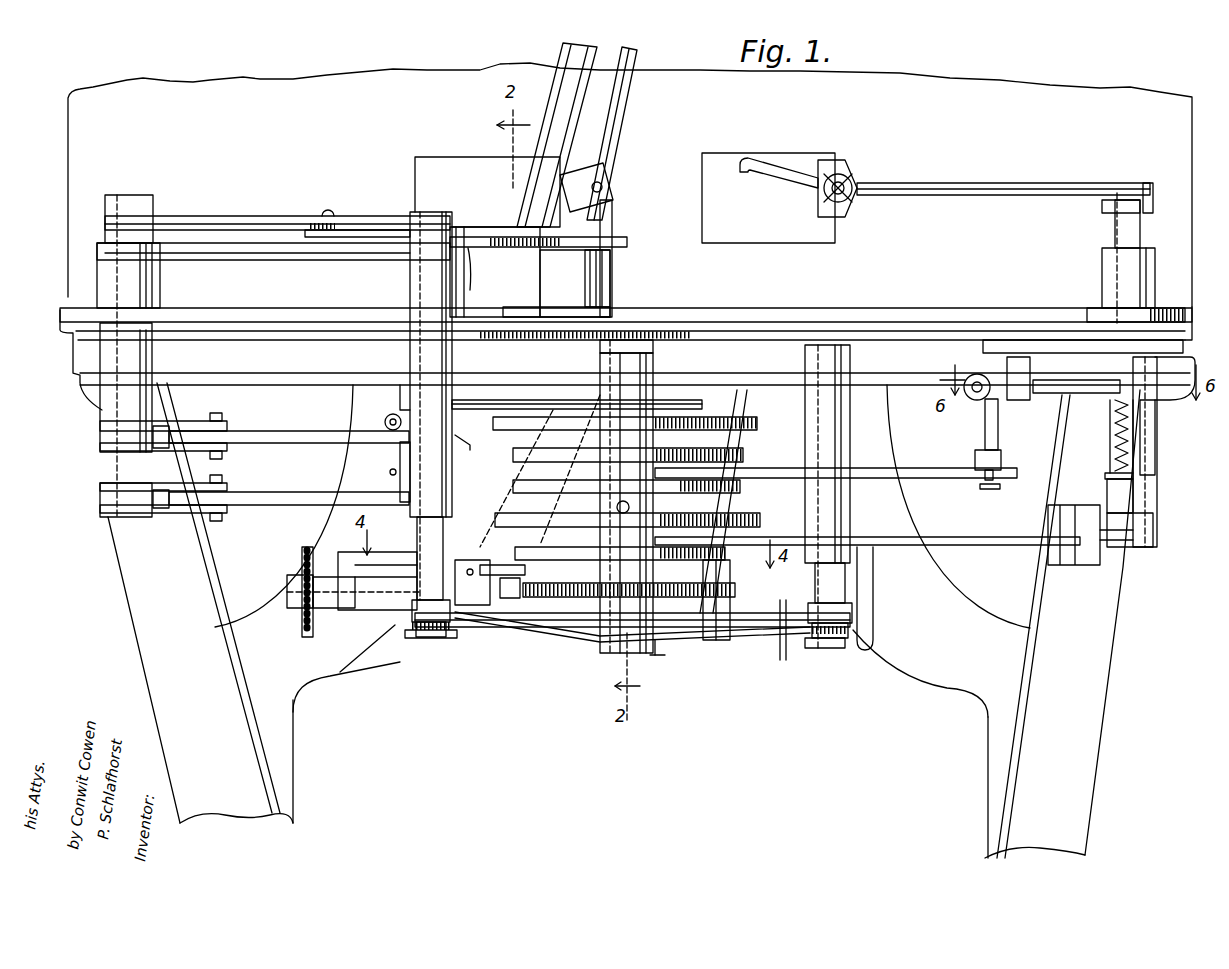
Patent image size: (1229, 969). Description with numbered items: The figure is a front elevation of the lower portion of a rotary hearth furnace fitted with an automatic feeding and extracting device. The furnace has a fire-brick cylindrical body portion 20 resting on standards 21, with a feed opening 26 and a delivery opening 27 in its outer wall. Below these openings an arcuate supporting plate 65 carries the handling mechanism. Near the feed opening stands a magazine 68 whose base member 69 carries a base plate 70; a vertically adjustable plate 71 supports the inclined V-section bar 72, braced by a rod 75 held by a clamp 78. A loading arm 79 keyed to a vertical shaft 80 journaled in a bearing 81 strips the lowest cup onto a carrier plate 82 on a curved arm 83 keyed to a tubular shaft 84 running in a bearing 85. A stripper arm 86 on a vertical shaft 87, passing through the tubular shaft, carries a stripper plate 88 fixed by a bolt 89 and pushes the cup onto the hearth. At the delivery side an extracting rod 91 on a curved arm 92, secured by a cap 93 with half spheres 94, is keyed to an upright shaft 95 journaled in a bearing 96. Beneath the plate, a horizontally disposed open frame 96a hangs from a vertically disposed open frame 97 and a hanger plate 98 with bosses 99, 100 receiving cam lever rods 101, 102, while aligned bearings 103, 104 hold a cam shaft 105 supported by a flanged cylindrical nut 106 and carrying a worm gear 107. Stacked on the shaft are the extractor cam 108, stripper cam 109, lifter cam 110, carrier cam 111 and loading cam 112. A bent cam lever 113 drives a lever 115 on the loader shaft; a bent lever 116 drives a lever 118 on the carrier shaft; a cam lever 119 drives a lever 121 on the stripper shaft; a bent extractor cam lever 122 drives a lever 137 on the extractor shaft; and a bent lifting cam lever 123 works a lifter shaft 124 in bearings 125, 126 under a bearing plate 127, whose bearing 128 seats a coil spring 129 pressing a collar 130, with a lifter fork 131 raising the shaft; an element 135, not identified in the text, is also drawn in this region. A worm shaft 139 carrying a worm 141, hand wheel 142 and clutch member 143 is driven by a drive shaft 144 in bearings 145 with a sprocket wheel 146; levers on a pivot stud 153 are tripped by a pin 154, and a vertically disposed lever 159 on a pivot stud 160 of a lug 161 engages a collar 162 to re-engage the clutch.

The cylindrical body portion 20 is at (626, 236).
The standards 21 is at (624, 620).
The feed opening 26 is at (487, 192).
The delivery opening 27 is at (768, 198).
The supporting plate 65 is at (878, 330).
The magazine 68 is at (598, 274).
The base member 69 is at (581, 278).
The base plate 70 is at (628, 242).
The plate 71 is at (607, 205).
The bar 72 is at (540, 140).
The rod 75 is at (618, 118).
The clamp 78 is at (603, 175).
The loading arm 79 is at (481, 269).
The vertical shaft 80 is at (420, 215).
The bearing 81 is at (410, 285).
The carrier plate 82 is at (495, 272).
The curved arm 83 is at (273, 254).
The tubular shaft 84 is at (105, 407).
The bearing 85 is at (160, 285).
The stripper arm 86 is at (205, 215).
The vertical shaft 87 is at (110, 517).
The stripper plate 88 is at (365, 238).
The bolt 89 is at (332, 212).
The extracting rod 91 is at (772, 166).
The curved arm 92 is at (978, 183).
The cap 93 is at (1115, 240).
The half spheres 94 is at (850, 175).
The upright shaft 95 is at (1157, 500).
The bearing 96 is at (1120, 285).
The horizontally disposed open frame 96a is at (716, 642).
The vertically disposed open frame 97 is at (742, 404).
The hanger plate 98 is at (712, 350).
The boss 99 is at (403, 405).
The boss 100 is at (850, 362).
The cam lever rod 101 is at (430, 640).
The cam lever rod 102 is at (828, 649).
The bearing 103 is at (653, 362).
The bearing 104 is at (656, 656).
The cam shaft 105 is at (596, 677).
The flanged cylindrical nut 106 is at (605, 628).
The worm gear 107 is at (722, 640).
The extractor cam 108 is at (620, 553).
The stripper cam 109 is at (627, 520).
The lifter cam 110 is at (626, 486).
The carrier cam 111 is at (628, 454).
The loading cam 112 is at (625, 422).
The bent cam lever 113 is at (485, 398).
The lever 115 is at (431, 500).
The bent lever 116 is at (300, 443).
The lever 118 is at (190, 425).
The cam lever 119 is at (275, 506).
The lever 121 is at (170, 517).
The bent extractor cam lever 122 is at (980, 546).
The bent lifting cam lever 123 is at (932, 460).
The lifter shaft 124 is at (1055, 394).
The bearing 125 is at (1030, 374).
The bearing 126 is at (1165, 372).
The bearing plate 127 is at (1083, 346).
The bearing 128 is at (1148, 480).
The coil spring 129 is at (1110, 466).
The collar 130 is at (1108, 410).
The lifter fork 131 is at (1166, 437).
The bracket 135 is at (1000, 445).
The lever 137 is at (1085, 566).
The worm shaft 139 is at (786, 647).
The worm 141 is at (583, 598).
The hand wheel 142 is at (874, 630).
The clutch member 143 is at (540, 598).
The drive shaft 144 is at (400, 612).
The bearings 145 is at (330, 612).
The sprocket wheel 146 is at (300, 625).
The pivot stud 153 is at (500, 605).
The pin 154 is at (528, 600).
The vertically disposed lever 159 is at (395, 462).
The pivot stud 160 is at (385, 420).
The lug 161 is at (471, 450).
The collar 162 is at (360, 660).